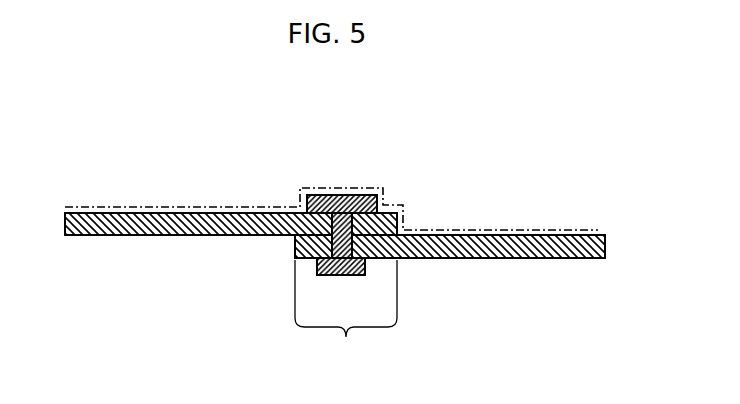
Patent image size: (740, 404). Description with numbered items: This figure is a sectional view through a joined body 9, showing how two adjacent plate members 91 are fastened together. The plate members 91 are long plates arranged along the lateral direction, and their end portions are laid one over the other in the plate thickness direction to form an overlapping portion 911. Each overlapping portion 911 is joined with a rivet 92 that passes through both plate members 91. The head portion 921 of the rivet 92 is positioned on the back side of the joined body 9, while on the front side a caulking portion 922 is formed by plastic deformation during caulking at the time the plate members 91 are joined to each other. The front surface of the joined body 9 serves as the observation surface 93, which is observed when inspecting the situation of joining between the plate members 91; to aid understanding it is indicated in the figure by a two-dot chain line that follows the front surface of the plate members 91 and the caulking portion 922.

The joined body 9 is at (469, 188).
The plate member 91 is at (189, 209).
The rivet 92 is at (367, 191).
The head portion 921 is at (341, 277).
The caulking portion 922 is at (327, 195).
The observation surface 93 is at (597, 230).
The overlapping portion 911 is at (346, 313).